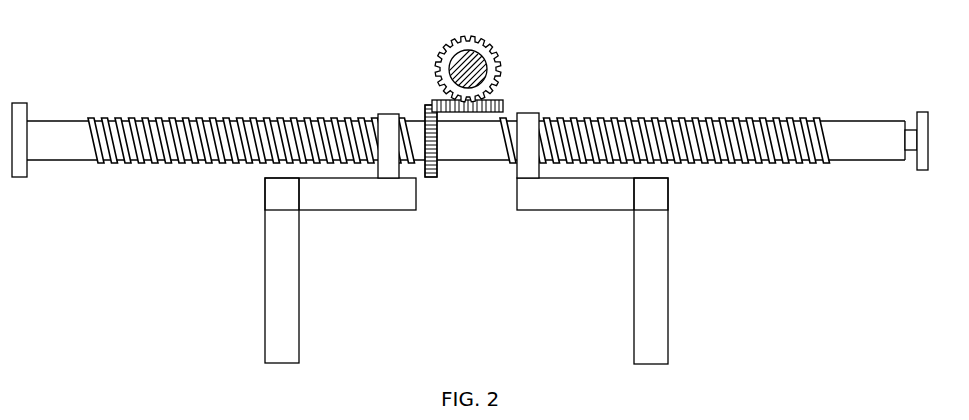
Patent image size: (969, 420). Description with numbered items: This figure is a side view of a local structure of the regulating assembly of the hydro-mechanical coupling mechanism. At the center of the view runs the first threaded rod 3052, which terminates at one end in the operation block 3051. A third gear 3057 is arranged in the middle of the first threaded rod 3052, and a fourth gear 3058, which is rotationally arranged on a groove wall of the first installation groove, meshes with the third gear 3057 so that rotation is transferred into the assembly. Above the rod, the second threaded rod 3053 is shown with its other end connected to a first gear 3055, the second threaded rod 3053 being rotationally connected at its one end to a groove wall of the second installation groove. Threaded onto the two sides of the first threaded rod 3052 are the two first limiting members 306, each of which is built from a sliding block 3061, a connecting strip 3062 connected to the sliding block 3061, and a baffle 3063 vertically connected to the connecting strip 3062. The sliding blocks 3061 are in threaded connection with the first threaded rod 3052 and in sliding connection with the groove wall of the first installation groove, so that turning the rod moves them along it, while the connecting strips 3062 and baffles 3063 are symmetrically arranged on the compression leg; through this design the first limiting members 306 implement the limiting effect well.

The first limiting member 306 is at (532, 108).
The operation block 3051 is at (923, 143).
The first threaded rod 3052 is at (742, 125).
The second threaded rod 3053 is at (461, 62).
The first gear 3055 is at (483, 43).
The third gear 3057 is at (431, 178).
The fourth gear 3058 is at (434, 100).
The sliding block 3061 is at (523, 160).
The connecting strip 3062 is at (589, 198).
The baffle 3063 is at (656, 323).